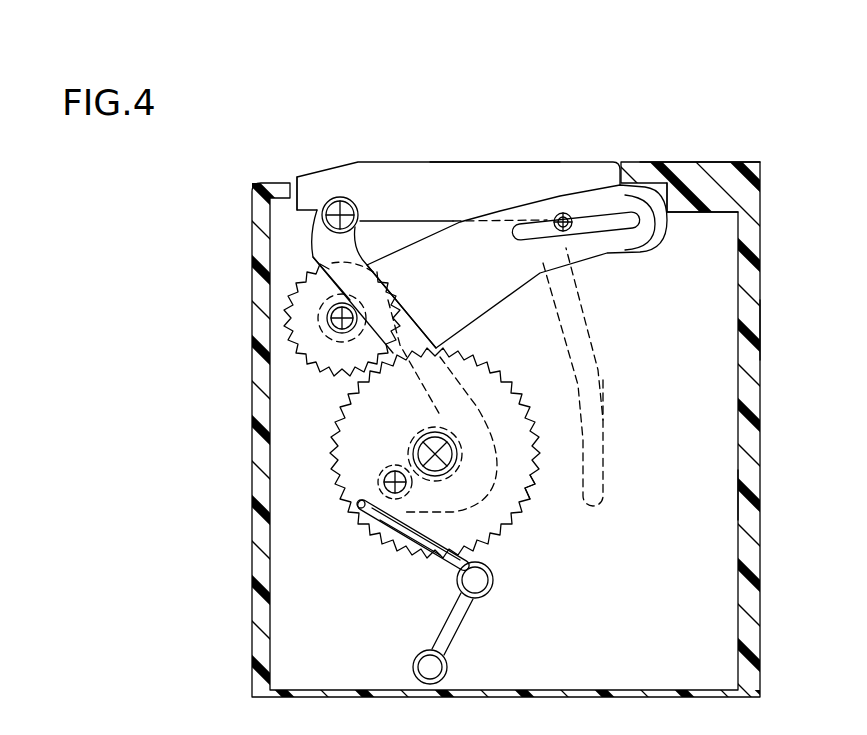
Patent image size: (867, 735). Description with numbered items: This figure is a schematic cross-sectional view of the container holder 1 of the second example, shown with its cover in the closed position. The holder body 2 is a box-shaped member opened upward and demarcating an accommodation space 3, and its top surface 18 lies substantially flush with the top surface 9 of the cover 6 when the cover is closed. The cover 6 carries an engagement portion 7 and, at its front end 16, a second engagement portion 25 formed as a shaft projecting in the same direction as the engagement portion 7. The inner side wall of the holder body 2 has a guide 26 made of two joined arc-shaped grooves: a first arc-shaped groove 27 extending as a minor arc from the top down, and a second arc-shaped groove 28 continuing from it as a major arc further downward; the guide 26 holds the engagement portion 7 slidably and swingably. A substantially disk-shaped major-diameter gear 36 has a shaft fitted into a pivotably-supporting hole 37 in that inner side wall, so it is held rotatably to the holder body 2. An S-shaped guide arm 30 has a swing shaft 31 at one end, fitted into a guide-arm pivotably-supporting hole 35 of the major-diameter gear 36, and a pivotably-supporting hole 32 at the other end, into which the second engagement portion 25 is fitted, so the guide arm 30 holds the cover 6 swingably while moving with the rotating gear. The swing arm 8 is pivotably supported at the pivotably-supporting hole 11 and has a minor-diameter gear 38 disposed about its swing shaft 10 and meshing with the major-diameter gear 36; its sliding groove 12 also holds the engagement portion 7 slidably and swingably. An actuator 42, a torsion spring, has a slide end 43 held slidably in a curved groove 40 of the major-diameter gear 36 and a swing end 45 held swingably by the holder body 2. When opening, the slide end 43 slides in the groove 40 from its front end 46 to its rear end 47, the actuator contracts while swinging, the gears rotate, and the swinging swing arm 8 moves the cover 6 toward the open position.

The container holder 1 is at (642, 134).
The holder body 2 is at (748, 343).
The accommodation space 3 is at (687, 482).
The cover 6 is at (472, 166).
The engagement portion 7 is at (565, 212).
The swing arm 8 is at (520, 205).
The top surface 9 is at (400, 162).
The swing shaft 10 is at (311, 245).
The pivotably-supporting hole 11 is at (332, 330).
The sliding groove 12 is at (613, 187).
The front end 16 is at (288, 175).
The top surface 18 is at (712, 162).
The second engagement portion 25 is at (360, 207).
The guide 26 is at (607, 361).
The first arc-shaped groove 27 is at (683, 262).
The second arc-shaped groove 28 is at (607, 393).
The guide arm 30 is at (405, 300).
The swing shaft 31 is at (383, 467).
The pivotably-supporting hole 32 is at (334, 198).
The guide-arm pivotably-supporting hole 35 is at (388, 460).
The major-diameter gear 36 is at (500, 504).
The pivotably-supporting hole 37 is at (425, 437).
The minor-diameter gear 38 is at (285, 290).
The curved groove 40 is at (490, 520).
The actuator 42 is at (483, 605).
The slide end 43 is at (355, 498).
The swing end 45 is at (413, 663).
The front end 46 is at (357, 507).
The rear end 47 is at (413, 548).